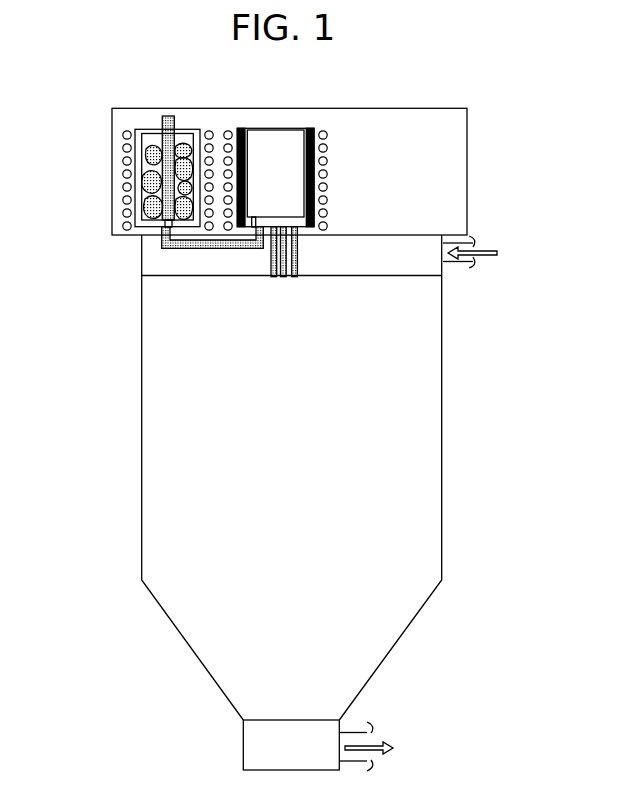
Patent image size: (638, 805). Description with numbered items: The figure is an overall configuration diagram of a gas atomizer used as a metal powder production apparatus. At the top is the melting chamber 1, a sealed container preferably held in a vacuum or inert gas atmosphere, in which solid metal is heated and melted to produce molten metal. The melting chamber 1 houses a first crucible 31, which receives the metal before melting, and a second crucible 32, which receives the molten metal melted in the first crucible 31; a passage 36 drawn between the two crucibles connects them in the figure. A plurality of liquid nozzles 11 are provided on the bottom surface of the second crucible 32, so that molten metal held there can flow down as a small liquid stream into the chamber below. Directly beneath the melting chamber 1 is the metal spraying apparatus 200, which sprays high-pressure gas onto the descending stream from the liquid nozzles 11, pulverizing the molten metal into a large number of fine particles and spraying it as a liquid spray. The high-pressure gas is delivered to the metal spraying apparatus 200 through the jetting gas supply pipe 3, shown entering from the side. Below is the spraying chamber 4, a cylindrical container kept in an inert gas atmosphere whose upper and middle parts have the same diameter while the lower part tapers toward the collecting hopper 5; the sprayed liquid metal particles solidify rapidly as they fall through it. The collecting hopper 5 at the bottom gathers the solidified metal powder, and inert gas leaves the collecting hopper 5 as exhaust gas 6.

The melting chamber 1 is at (440, 185).
The jetting gas supply pipe 3 is at (481, 255).
The spraying chamber 4 is at (303, 469).
The collecting hopper 5 is at (267, 706).
The exhaust gas 6 is at (377, 746).
The liquid nozzles 11 is at (282, 278).
The first crucible 31 is at (200, 128).
The second crucible 32 is at (305, 128).
The transfer pipe 36 is at (180, 250).
The metal spraying apparatus 200 is at (245, 276).